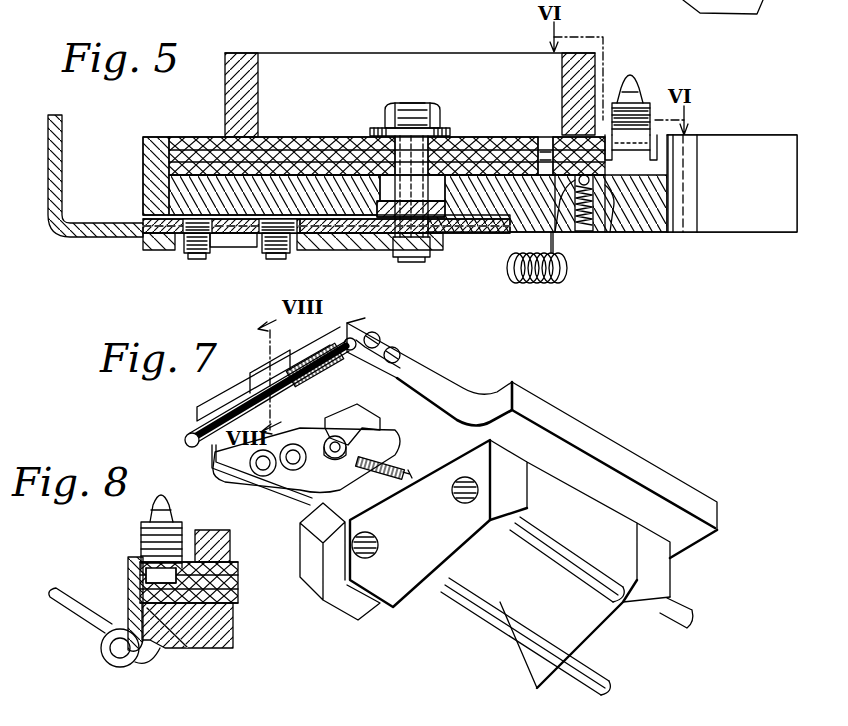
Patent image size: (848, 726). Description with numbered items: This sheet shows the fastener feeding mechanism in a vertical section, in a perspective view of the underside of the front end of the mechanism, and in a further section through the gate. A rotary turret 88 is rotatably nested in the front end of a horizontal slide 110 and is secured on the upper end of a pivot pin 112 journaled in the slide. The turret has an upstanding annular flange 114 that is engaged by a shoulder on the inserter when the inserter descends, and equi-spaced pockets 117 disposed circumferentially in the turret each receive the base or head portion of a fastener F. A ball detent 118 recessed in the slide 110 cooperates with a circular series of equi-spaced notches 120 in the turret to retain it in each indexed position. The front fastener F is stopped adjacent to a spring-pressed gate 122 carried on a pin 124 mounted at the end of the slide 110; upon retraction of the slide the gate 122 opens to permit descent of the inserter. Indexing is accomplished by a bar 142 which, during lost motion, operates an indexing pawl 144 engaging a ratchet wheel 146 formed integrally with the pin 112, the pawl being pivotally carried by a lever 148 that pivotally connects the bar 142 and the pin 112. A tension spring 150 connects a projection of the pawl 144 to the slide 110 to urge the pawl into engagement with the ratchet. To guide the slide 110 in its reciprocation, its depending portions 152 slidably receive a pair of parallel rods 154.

In FIG. 5, the rotary turret 88 is at (387, 136).
In FIG. 8, the rotary turret 88 is at (208, 582).
In FIG. 5, the horizontal slide 110 is at (470, 204).
In FIG. 7, the horizontal slide 110 is at (532, 438).
In FIG. 8, the horizontal slide 110 is at (187, 640).
In FIG. 5, the pivot pin 112 is at (416, 163).
In FIG. 7, the pivot pin 112 is at (376, 441).
In FIG. 5, the upstanding annular flange 114 is at (410, 95).
In FIG. 8, the upstanding annular flange 114 is at (236, 546).
In FIG. 5, the pockets 117 is at (673, 150).
In FIG. 5, the ball detent 118 is at (592, 226).
In FIG. 5, the notches 120 is at (611, 221).
In FIG. 7, the spring-pressed gate 122 is at (267, 387).
In FIG. 8, the spring-pressed gate 122 is at (96, 602).
In FIG. 7, the pin 124 is at (377, 337).
In FIG. 8, the pin 124 is at (146, 660).
In FIG. 5, the bar 142 is at (174, 176).
In FIG. 7, the bar 142 is at (233, 475).
In FIG. 5, the indexing pawl 144 is at (260, 253).
In FIG. 7, the indexing pawl 144 is at (306, 434).
In FIG. 5, the ratchet wheel 146 is at (326, 249).
In FIG. 7, the ratchet wheel 146 is at (374, 423).
In FIG. 5, the lever 148 is at (294, 244).
In FIG. 7, the lever 148 is at (299, 464).
In FIG. 5, the tension spring 150 is at (555, 271).
In FIG. 7, the tension spring 150 is at (362, 411).
In FIG. 7, the depending portions 152 is at (485, 564).
In FIG. 7, the parallel rods 154 is at (567, 606).
In FIG. 5, the fasteners F is at (640, 97).
In FIG. 8, the fasteners F is at (147, 531).